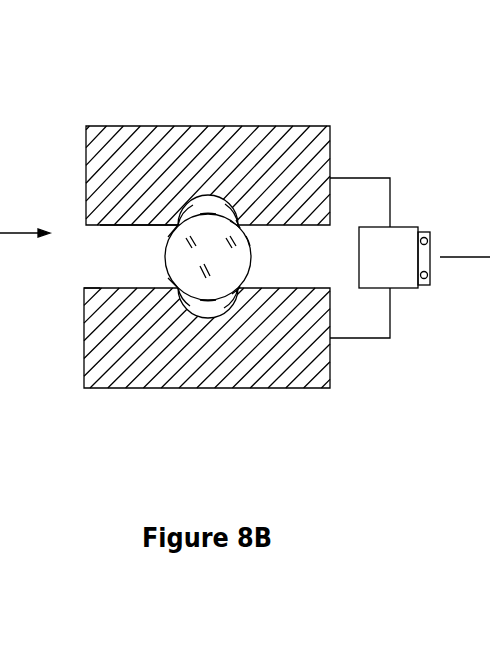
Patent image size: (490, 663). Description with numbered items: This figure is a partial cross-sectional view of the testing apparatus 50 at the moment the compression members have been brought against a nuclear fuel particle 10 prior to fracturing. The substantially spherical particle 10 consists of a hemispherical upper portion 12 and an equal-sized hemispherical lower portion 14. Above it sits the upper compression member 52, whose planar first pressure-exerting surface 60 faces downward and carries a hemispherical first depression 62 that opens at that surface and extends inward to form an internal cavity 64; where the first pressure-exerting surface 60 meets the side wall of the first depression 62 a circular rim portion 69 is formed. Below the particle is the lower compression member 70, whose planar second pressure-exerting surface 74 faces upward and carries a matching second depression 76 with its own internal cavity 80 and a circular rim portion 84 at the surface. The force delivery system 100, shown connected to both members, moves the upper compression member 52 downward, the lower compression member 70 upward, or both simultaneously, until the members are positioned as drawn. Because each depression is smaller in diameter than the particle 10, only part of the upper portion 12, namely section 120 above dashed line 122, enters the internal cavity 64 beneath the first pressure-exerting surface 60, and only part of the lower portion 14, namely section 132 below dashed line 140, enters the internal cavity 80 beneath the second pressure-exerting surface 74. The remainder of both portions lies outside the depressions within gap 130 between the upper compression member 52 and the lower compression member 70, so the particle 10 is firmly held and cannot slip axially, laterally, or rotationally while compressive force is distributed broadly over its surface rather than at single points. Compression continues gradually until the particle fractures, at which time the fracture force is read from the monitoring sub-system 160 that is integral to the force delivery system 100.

The testing apparatus 50 is at (360, 82).
The nuclear fuel particle 10 is at (168, 253).
The hemispherical upper portion 12 is at (170, 237).
The hemispherical lower portion 14 is at (170, 278).
The upper compression member 52 is at (240, 220).
The first pressure-exerting surface 60 is at (112, 226).
The first depression 62 is at (193, 205).
The internal cavity 64 is at (228, 205).
The circular rim portion 69 is at (238, 224).
The lower compression member 70 is at (298, 390).
The second pressure-exerting surface 74 is at (95, 286).
The second depression 76 is at (188, 303).
The internal cavity 80 is at (218, 310).
The circular rim portion 84 is at (238, 292).
The force delivery system 100 is at (394, 232).
The section 120 is at (208, 216).
The dashed line 122 is at (233, 237).
The gap 130 is at (107, 257).
The section 132 is at (207, 296).
The dashed line 140 is at (228, 288).
The monitoring sub-system 160 is at (424, 290).